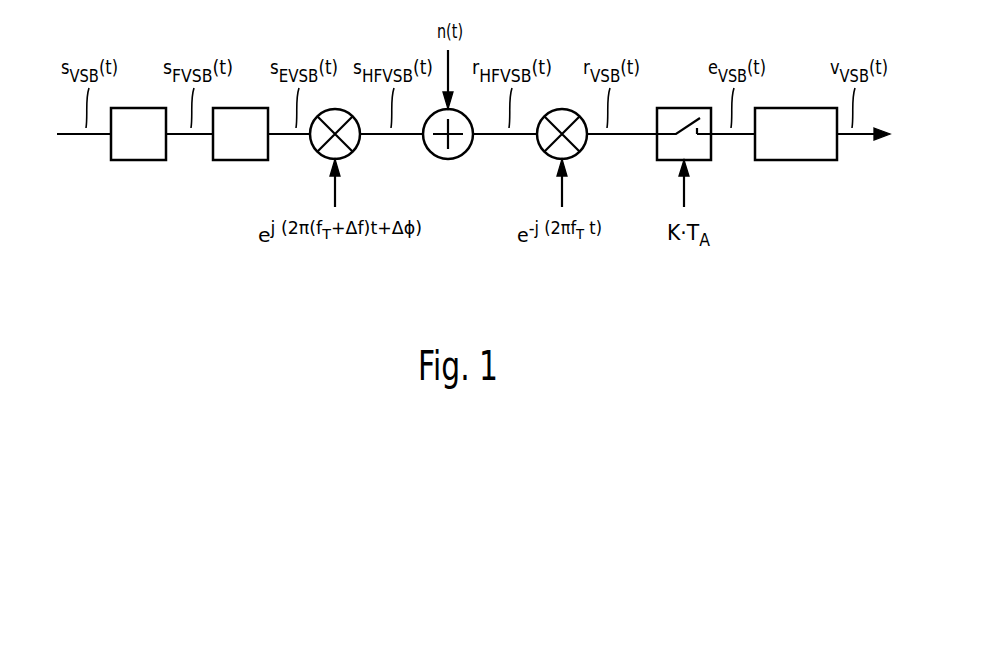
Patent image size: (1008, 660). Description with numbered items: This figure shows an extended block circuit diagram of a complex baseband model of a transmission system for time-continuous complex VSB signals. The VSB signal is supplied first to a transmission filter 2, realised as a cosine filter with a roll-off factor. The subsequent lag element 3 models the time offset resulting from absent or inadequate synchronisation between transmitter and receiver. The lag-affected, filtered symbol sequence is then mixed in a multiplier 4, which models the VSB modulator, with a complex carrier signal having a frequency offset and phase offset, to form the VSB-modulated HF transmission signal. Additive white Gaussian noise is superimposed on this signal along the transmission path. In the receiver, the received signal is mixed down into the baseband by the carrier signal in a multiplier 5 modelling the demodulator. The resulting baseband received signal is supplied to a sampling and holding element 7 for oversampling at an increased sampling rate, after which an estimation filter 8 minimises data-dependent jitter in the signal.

The transmission filter 2 is at (137, 108).
The lag element 3 is at (240, 108).
The multiplier 4 is at (353, 146).
The multiplier 5 is at (580, 146).
The sampling and holding element 7 is at (682, 108).
The estimation filter 8 is at (796, 108).